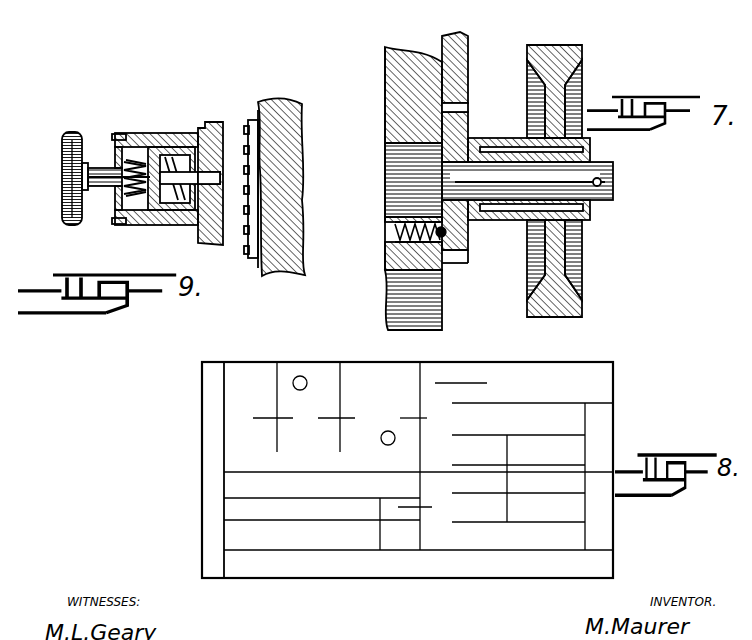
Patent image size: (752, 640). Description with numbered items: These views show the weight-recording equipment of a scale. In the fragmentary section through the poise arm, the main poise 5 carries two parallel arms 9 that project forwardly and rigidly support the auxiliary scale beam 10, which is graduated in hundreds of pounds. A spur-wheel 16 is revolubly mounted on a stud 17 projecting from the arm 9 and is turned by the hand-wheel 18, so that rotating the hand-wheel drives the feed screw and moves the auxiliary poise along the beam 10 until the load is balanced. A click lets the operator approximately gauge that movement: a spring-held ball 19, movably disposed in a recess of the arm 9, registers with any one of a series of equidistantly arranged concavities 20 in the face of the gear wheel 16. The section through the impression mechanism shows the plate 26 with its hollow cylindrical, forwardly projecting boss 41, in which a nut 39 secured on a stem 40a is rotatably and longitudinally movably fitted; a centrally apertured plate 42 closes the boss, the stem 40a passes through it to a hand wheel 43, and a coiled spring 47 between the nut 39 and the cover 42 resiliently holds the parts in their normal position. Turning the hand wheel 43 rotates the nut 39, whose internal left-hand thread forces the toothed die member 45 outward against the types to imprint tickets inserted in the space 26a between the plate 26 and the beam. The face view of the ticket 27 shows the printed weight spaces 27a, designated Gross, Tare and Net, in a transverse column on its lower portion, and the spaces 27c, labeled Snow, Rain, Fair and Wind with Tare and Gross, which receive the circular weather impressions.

In FIG. 9, the main poise 5 is at (284, 172).
In FIG. 9, the parallel arms 9 is at (258, 173).
In FIG. 7, the parallel arms 9 is at (385, 107).
In FIG. 7, the auxiliary scale beam 10 is at (384, 300).
In FIG. 7, the spur-wheel 16 is at (470, 122).
In FIG. 7, the stud 17 is at (613, 187).
In FIG. 7, the hand-wheel 18 is at (582, 48).
In FIG. 7, the spring-held ball 19 is at (444, 246).
In FIG. 7, the concavities 20 is at (456, 108).
In FIG. 9, the plate 26 is at (210, 121).
In FIG. 9, the space 26a is at (235, 120).
In FIG. 8, the ticket 27 is at (194, 433).
In FIG. 8, the weight spaces 27a is at (575, 443).
In FIG. 8, the weather spaces 27c is at (241, 392).
In FIG. 9, the nut 39 is at (137, 202).
In FIG. 9, the stem 40a is at (97, 167).
In FIG. 9, the boss 41 is at (160, 133).
In FIG. 9, the centrally apertured plate 42 is at (112, 189).
In FIG. 9, the hand wheel 43 is at (69, 131).
In FIG. 9, the die member 45 is at (173, 215).
In FIG. 9, the coiled spring 47 is at (114, 200).